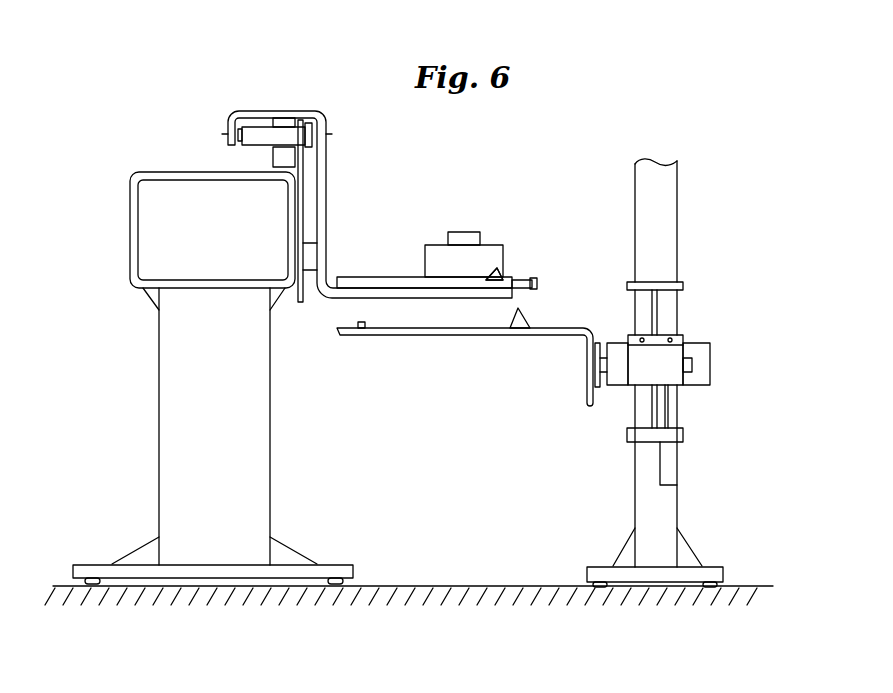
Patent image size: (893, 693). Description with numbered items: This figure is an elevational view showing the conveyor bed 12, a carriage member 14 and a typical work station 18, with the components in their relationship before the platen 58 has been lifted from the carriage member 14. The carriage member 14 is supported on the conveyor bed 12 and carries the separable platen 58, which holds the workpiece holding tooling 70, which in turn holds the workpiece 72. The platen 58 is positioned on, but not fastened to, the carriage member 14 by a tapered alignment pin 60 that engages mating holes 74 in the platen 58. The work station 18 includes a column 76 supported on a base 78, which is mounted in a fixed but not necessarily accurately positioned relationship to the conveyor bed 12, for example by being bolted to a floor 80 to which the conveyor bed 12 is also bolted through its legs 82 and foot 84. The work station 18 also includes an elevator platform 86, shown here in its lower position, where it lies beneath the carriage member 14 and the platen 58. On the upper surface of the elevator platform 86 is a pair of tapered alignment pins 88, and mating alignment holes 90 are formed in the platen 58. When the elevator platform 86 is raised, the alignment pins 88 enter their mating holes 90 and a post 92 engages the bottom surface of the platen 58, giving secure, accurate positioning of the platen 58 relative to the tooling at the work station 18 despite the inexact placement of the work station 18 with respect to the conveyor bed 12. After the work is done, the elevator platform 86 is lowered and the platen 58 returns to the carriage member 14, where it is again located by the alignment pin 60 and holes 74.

The conveyor bed 12 is at (158, 162).
The carriage member 14 is at (273, 98).
The work station 18 is at (690, 236).
The platen 58 is at (366, 277).
The tapered alignment pin 60 is at (500, 270).
The workpiece holding tooling 70 is at (432, 245).
The workpiece 72 is at (463, 232).
The mating holes 74 is at (493, 278).
The column 76 is at (635, 487).
The base 78 is at (712, 567).
The floor 80 is at (461, 630).
The legs 82 is at (158, 410).
The foot 84 is at (100, 565).
The elevator platform 86 is at (473, 337).
The tapered alignment pins 88 is at (525, 318).
The mating alignment holes 90 is at (527, 278).
The post 92 is at (355, 328).